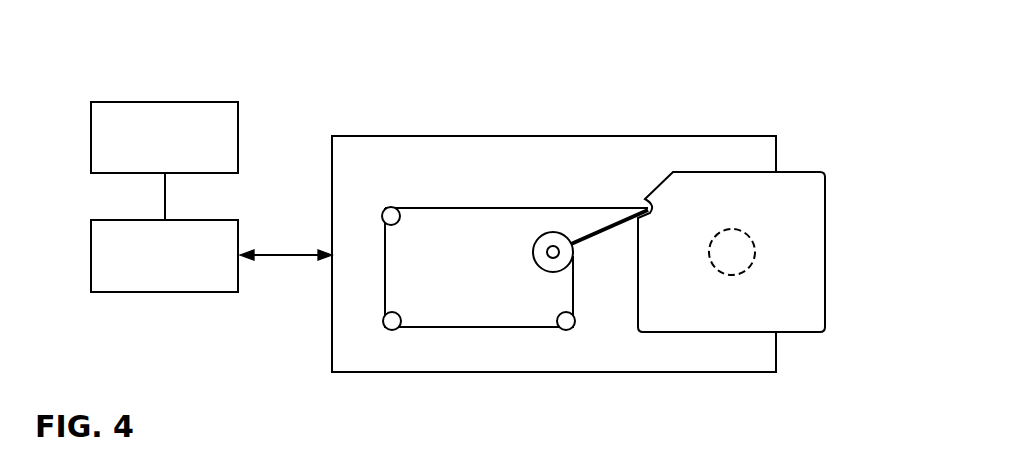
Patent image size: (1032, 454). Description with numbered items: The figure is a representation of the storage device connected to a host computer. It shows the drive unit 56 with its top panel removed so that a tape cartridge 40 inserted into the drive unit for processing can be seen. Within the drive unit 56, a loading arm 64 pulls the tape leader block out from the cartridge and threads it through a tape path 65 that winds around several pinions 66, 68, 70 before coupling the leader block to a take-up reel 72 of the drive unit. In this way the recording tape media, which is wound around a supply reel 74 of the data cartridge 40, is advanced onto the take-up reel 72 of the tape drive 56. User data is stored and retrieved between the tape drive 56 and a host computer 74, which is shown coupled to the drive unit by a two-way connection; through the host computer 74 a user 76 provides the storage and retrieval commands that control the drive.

The tape cartridge 40 is at (825, 218).
The drive unit 56 is at (388, 135).
The loading arm 64 is at (614, 235).
The tape path 65 is at (463, 207).
The pinion 66 is at (388, 207).
The pinion 68 is at (390, 331).
The pinion 70 is at (567, 331).
The take-up reel 72 is at (551, 232).
The host computer 74 is at (131, 292).
The user 76 is at (140, 102).